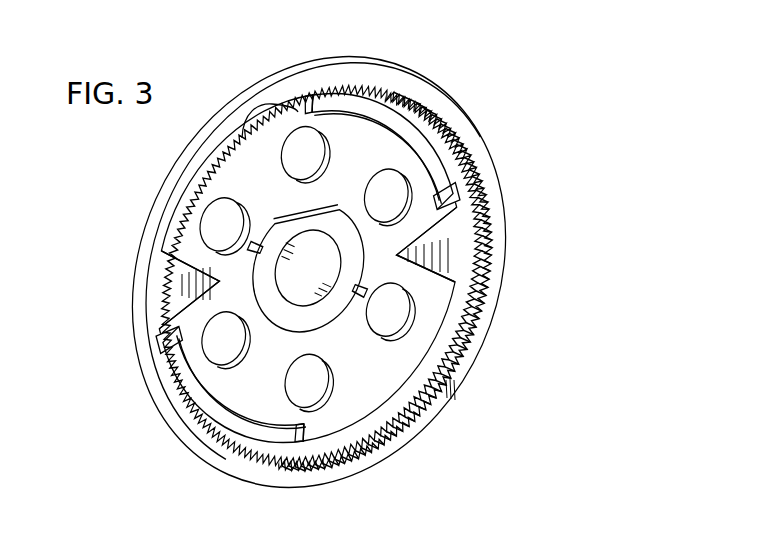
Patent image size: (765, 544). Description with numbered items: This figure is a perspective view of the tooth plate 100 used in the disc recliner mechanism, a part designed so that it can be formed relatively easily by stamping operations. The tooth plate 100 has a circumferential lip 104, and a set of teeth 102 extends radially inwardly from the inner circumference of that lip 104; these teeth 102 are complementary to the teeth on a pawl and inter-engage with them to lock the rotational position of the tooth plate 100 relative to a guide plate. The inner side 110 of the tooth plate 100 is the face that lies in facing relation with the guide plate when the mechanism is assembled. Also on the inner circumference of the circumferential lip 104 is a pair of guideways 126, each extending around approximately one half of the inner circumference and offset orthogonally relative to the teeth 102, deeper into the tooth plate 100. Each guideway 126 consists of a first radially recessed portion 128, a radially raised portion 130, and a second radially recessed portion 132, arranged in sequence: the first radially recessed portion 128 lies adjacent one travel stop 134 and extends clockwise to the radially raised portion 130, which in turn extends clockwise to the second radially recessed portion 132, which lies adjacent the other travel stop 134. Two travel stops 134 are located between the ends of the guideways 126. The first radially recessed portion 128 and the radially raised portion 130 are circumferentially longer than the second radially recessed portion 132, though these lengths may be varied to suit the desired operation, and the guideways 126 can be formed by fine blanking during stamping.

The tooth plate 100 is at (452, 97).
The teeth 102 is at (489, 263).
The circumferential lip 104 is at (486, 326).
The inner side 110 is at (331, 207).
The guideway 126 is at (285, 122).
The first radially recessed portion 128 is at (236, 134).
The radially raised portion 130 is at (434, 186).
The second radially recessed portion 132 is at (452, 207).
The travel stop 134 is at (464, 250).